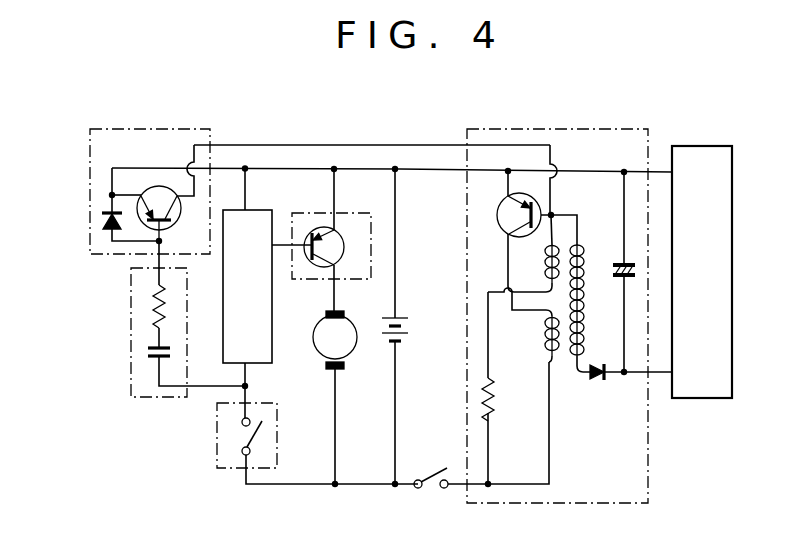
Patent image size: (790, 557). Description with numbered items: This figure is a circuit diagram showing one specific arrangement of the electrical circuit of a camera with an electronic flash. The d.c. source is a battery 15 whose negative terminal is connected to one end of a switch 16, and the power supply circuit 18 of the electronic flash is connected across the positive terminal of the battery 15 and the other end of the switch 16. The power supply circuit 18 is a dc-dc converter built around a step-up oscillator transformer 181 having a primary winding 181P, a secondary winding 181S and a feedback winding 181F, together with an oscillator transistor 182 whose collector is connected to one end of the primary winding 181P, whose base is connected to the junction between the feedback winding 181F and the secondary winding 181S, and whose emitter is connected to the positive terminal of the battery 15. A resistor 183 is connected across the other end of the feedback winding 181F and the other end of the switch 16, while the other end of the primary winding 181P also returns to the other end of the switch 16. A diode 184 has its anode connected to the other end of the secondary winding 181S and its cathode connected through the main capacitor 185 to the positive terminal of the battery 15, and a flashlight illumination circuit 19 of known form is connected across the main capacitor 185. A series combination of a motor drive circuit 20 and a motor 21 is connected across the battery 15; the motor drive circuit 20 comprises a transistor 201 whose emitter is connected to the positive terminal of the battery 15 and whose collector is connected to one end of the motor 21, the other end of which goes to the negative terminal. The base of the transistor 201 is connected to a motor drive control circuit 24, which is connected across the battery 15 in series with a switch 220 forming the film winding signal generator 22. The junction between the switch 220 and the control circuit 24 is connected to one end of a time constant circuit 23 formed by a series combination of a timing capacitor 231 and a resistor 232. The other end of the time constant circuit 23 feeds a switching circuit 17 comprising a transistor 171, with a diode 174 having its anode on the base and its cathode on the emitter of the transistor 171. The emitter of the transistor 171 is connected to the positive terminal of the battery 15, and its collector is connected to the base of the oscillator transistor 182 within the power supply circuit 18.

The battery 15 is at (410, 326).
The switch 16 is at (433, 475).
The switching circuit 17 is at (147, 128).
The transistor 171 is at (178, 219).
The diode 174 is at (100, 216).
The power supply circuit 18 is at (573, 503).
The step-up oscillator transformer 181 is at (567, 331).
The feedback winding 181F is at (546, 268).
The primary winding 181P is at (545, 340).
The secondary winding 181S is at (580, 303).
The oscillator transistor 182 is at (503, 207).
The resistor 183 is at (493, 404).
The diode 184 is at (604, 379).
The main capacitor 185 is at (614, 267).
The flashlight illumination circuit 19 is at (693, 396).
The motor drive circuit 20 is at (352, 213).
The transistor 201 is at (320, 229).
The motor 21 is at (352, 352).
The film winding signal generator 22 is at (217, 450).
The switch 220 is at (256, 433).
The time constant circuit 23 is at (132, 396).
The timing capacitor 231 is at (148, 350).
The resistor 232 is at (150, 310).
The motor drive control circuit 24 is at (258, 362).